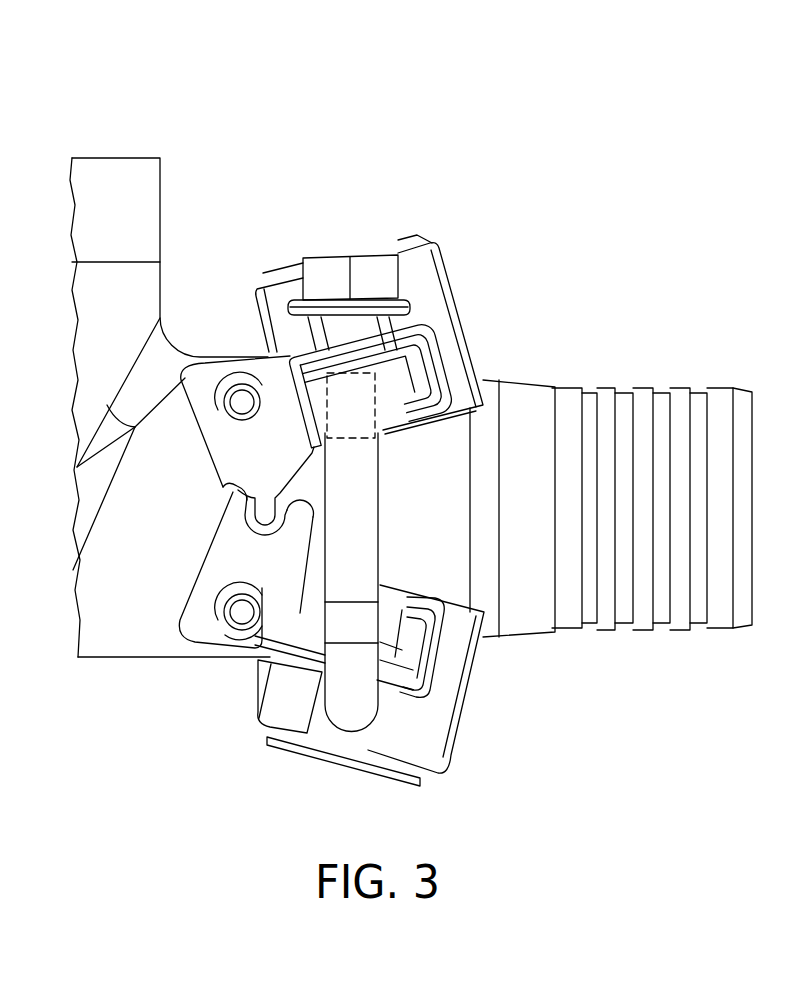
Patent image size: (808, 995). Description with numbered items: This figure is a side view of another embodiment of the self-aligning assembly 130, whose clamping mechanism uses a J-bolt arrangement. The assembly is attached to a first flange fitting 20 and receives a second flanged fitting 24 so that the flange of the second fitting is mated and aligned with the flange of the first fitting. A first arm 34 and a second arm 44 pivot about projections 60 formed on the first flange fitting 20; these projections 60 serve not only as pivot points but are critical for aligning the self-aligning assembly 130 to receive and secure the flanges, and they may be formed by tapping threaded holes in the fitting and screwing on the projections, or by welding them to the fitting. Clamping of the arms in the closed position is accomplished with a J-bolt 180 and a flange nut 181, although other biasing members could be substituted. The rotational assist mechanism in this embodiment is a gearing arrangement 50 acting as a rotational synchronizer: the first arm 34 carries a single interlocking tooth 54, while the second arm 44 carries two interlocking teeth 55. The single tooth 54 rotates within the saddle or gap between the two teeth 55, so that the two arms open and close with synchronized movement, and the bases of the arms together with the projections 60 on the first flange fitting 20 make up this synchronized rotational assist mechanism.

The first flange fitting 20 is at (122, 642).
The second flanged fitting 24 is at (530, 392).
The first arm 34 is at (428, 272).
The second arm 44 is at (440, 728).
The gearing arrangement 50 is at (203, 590).
The interlocking tooth 54 is at (267, 497).
The interlocking teeth 55 is at (230, 507).
The projections 60 is at (245, 613).
The self-aligning assembly 130 is at (460, 190).
The J-bolt 180 is at (348, 710).
The flange nut 181 is at (317, 262).